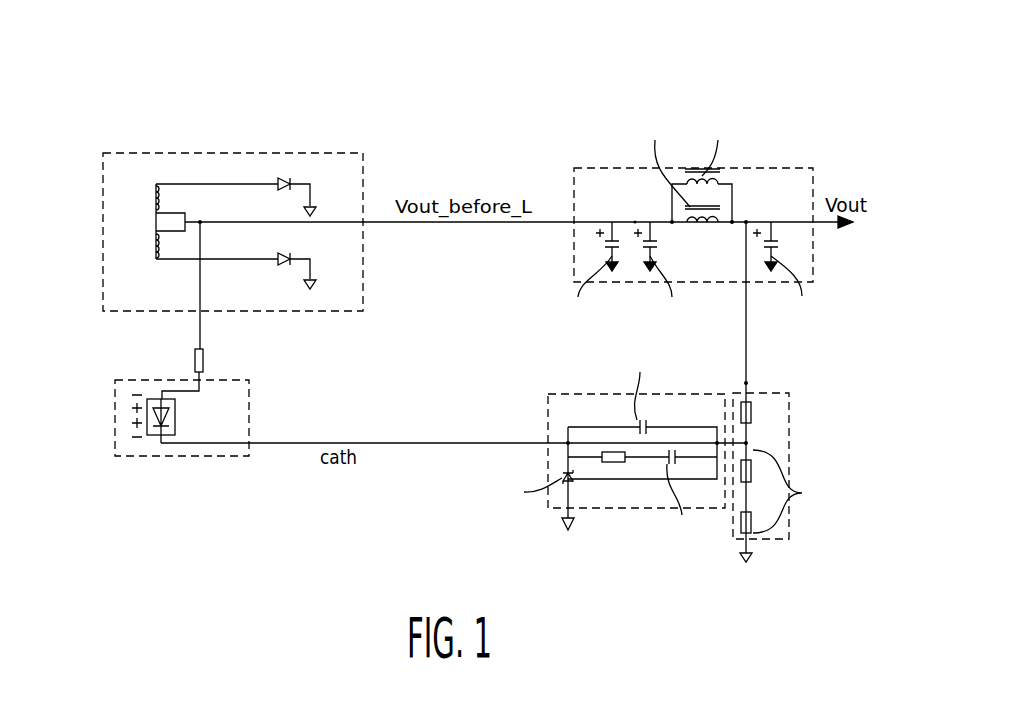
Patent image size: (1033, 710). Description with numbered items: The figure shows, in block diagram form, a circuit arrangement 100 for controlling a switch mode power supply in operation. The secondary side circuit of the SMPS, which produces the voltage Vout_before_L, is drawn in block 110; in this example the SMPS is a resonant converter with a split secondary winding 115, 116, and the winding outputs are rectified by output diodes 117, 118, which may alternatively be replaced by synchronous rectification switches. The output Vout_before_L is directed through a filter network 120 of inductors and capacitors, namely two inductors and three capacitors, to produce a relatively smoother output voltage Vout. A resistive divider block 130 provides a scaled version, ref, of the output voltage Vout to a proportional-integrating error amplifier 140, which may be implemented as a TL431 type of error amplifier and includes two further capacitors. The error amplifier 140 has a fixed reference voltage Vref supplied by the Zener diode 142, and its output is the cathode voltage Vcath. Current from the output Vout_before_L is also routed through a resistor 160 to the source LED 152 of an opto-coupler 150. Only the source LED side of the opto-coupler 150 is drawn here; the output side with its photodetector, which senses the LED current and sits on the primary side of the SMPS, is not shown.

The circuit arrangement 100 is at (695, 82).
The secondary side circuit 110 is at (165, 152).
The split secondary winding 115 is at (155, 197).
The split secondary winding 116 is at (155, 243).
The output diode 117 is at (289, 180).
The output diode 118 is at (286, 263).
The filter network 120 is at (574, 188).
The resistive divider block 130 is at (791, 438).
The proportional-integrating error amplifier 140 is at (585, 508).
The Zener diode 142 is at (526, 502).
The opto-coupler 150 is at (172, 457).
The source LED 152 is at (135, 418).
The resistor 160 is at (204, 362).